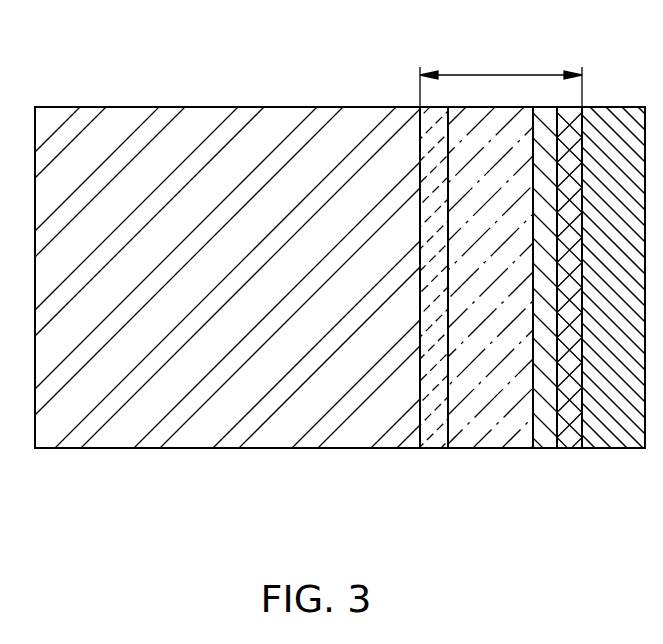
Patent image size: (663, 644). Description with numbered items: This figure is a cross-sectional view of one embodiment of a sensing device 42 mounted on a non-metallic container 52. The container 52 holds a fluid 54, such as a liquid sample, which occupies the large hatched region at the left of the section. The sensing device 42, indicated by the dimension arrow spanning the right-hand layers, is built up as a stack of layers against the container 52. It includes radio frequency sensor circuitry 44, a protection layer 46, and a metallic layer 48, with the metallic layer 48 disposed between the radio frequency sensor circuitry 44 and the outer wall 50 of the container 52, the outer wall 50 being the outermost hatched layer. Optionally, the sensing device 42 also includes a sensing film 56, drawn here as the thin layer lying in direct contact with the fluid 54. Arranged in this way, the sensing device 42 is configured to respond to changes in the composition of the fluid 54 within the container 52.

The sensing device 42 is at (503, 73).
The radio frequency sensor circuitry 44 is at (488, 448).
The protection layer 46 is at (543, 448).
The metallic layer 48 is at (568, 448).
The outer wall 50 is at (625, 448).
The non-metallic container 52 is at (228, 448).
The fluid 54 is at (190, 125).
The sensing film 56 is at (435, 448).